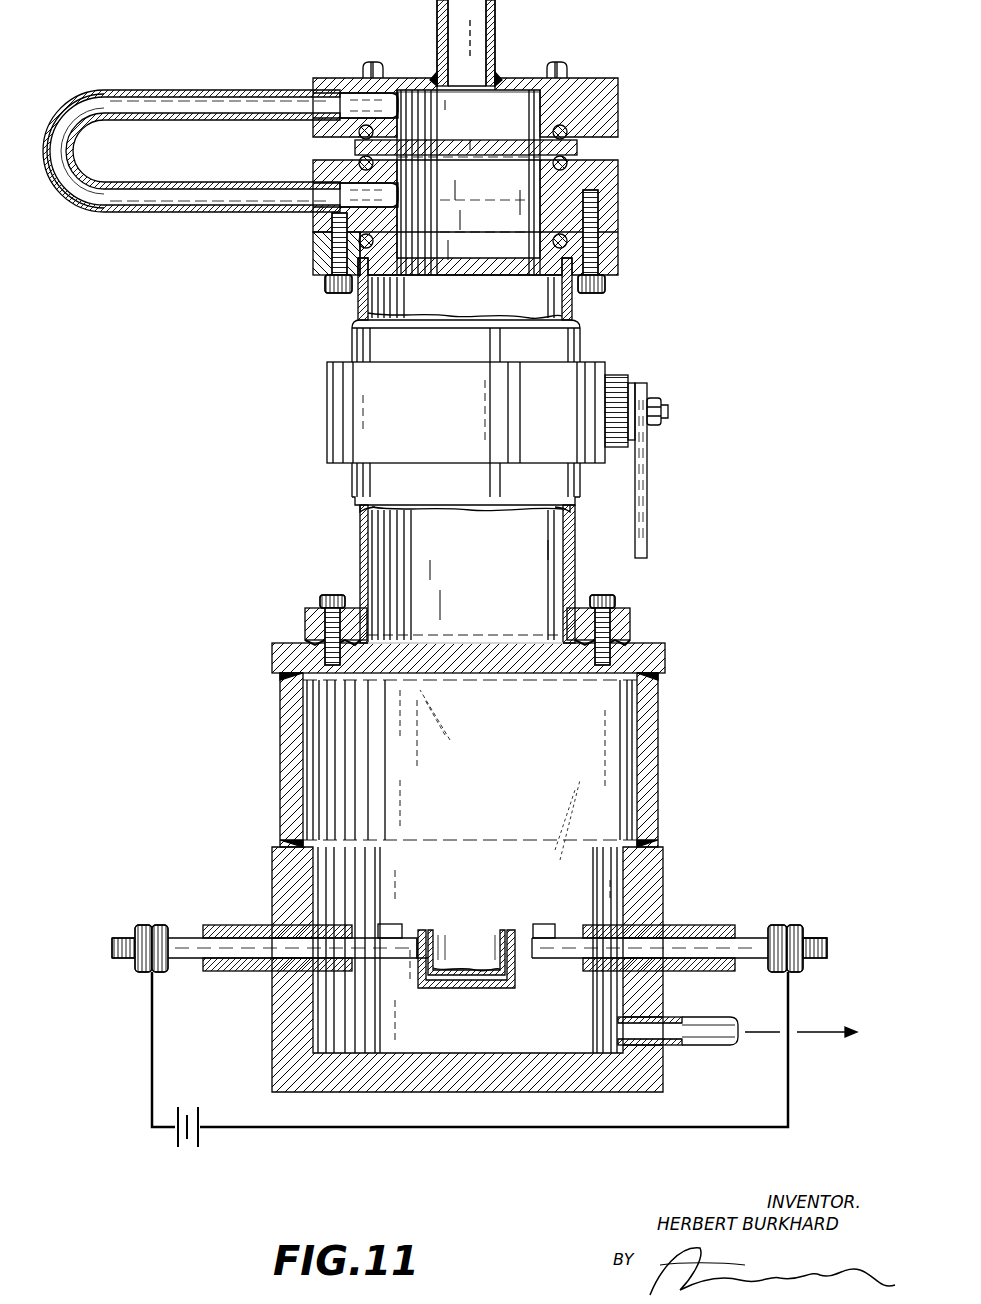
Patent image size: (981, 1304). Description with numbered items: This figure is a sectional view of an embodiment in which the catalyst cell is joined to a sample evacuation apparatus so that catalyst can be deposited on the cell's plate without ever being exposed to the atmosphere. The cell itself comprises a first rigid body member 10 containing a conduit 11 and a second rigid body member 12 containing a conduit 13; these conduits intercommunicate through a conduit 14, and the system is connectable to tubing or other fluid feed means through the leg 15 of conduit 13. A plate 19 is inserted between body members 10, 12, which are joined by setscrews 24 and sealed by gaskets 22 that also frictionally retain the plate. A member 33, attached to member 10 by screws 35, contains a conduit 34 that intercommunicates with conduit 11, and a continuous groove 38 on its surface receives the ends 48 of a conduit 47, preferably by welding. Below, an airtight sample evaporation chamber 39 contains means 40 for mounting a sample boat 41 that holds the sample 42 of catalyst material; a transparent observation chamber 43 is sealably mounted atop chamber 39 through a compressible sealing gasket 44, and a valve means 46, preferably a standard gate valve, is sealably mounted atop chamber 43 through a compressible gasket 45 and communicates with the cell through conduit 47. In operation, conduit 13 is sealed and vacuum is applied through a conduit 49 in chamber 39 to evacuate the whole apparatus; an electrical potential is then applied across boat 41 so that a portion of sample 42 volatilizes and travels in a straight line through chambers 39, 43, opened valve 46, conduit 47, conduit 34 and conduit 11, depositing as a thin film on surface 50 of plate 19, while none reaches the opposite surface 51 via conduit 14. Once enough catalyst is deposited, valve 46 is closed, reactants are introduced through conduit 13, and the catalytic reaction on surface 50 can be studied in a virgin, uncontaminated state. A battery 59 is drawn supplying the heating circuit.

The first rigid body member 10 is at (618, 197).
The conduit 11 is at (498, 222).
The second rigid body member 12 is at (618, 100).
The conduit 13 is at (457, 100).
The conduit 14 is at (195, 90).
The leg 15 is at (477, 34).
The plate 19 is at (577, 147).
The gaskets 22 is at (355, 161).
The setscrews 24 is at (371, 62).
The member 33 is at (313, 248).
The conduit 34 is at (494, 266).
The screws 35 is at (601, 293).
The continuous groove 38 is at (575, 265).
The sample evaporation chamber 39 is at (664, 886).
The mounting means 40 is at (558, 960).
The sample boat 41 is at (445, 988).
The sample 42 is at (489, 975).
The transparent observation chamber 43 is at (660, 761).
The compressible sealing gasket 44 is at (660, 846).
The compressible gasket 45 is at (665, 678).
The valve means 46 is at (464, 417).
The conduit 47 is at (494, 304).
The ends 48 is at (357, 292).
The conduit 49 is at (697, 1017).
The surface 50 is at (500, 157).
The surface 51 is at (472, 139).
The battery 59 is at (216, 1130).